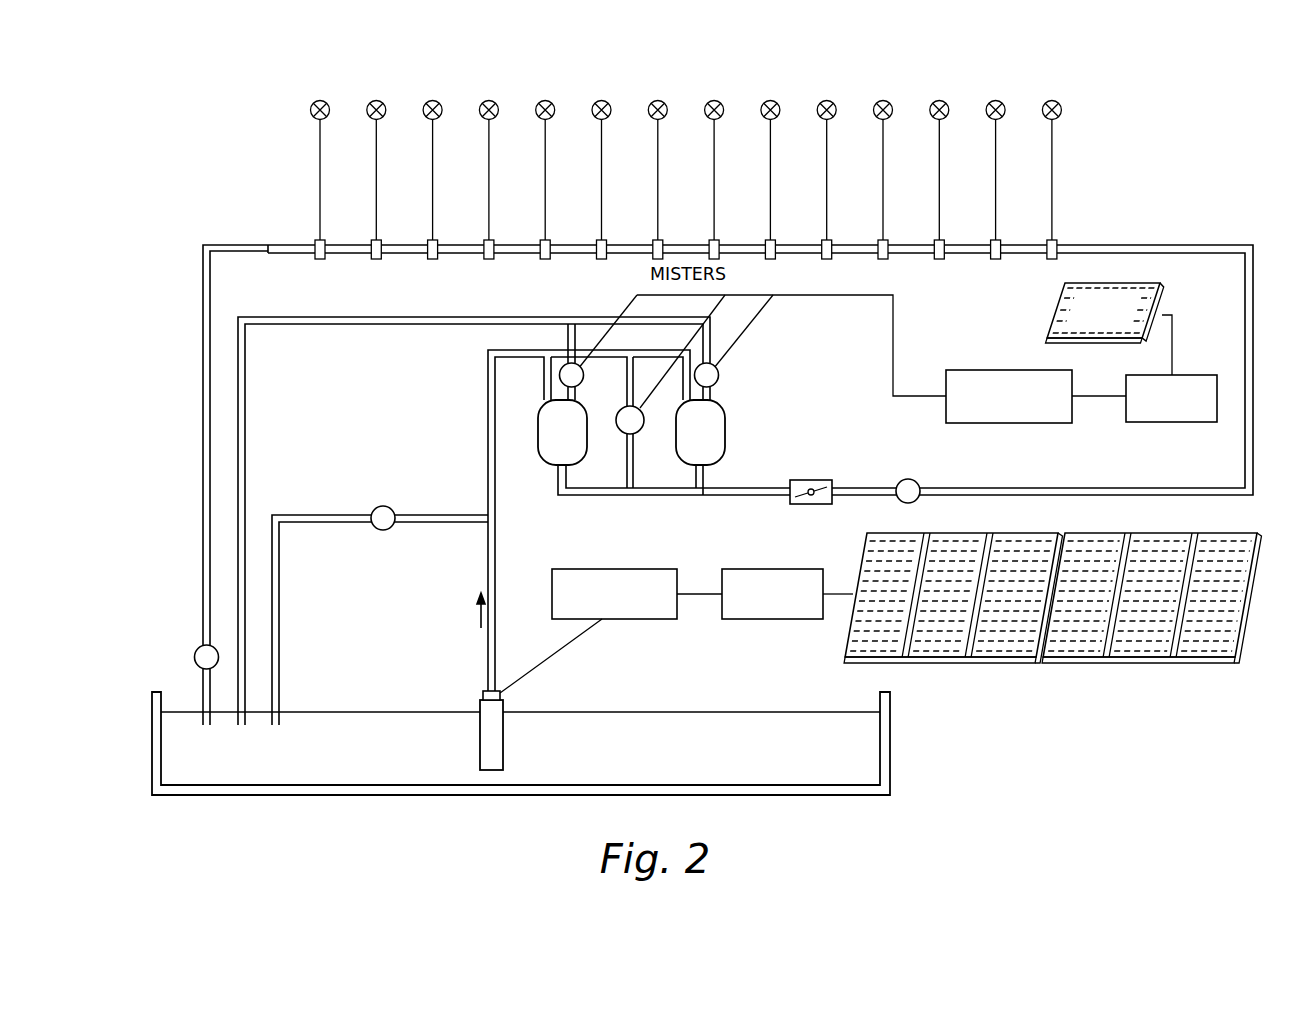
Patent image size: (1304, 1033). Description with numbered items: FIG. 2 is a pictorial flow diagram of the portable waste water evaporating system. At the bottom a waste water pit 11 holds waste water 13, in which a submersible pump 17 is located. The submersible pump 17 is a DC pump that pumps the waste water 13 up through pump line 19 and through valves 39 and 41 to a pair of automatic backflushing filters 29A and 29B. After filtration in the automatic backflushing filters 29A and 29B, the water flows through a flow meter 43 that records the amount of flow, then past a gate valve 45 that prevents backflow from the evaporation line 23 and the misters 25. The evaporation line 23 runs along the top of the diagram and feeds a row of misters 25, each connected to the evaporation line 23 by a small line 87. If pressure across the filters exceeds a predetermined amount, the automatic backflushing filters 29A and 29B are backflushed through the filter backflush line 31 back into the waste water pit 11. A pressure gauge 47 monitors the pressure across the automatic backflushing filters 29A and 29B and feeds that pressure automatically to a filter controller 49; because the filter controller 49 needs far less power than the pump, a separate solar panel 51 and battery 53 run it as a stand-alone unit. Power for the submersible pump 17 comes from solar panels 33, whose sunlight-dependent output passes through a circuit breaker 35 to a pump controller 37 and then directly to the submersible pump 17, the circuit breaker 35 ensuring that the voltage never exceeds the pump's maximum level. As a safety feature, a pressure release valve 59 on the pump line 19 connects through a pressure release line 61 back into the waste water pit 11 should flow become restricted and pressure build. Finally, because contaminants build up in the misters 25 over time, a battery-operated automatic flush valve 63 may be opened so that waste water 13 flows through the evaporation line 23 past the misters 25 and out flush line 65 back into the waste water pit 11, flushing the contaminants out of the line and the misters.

The waste water pit 11 is at (890, 728).
The waste water 13 is at (520, 736).
The submersible pump 17 is at (480, 725).
The pump line 19 is at (497, 567).
The evaporation line 23 is at (1138, 244).
The misters 25 is at (1080, 105).
The small line 87 is at (320, 170).
The automatic backflushing filter 29A is at (562, 432).
The automatic backflushing filter 29B is at (700, 432).
The filter backflush line 31 is at (245, 397).
The solar panels 33 is at (1030, 663).
The circuit breaker 35 is at (785, 620).
The pump controller 37 is at (635, 619).
The valve 39 is at (584, 378).
The valve 41 is at (720, 376).
The flow meter 43 is at (813, 480).
The gate valve 45 is at (913, 479).
The pressure gauge 47 is at (643, 430).
The filter controller 49 is at (1008, 423).
The solar panel 51 is at (1143, 281).
The battery 53 is at (1167, 423).
The pressure release valve 59 is at (380, 501).
The pressure release line 61 is at (280, 643).
The automatic flush valve 63 is at (195, 648).
The flush line 65 is at (203, 402).